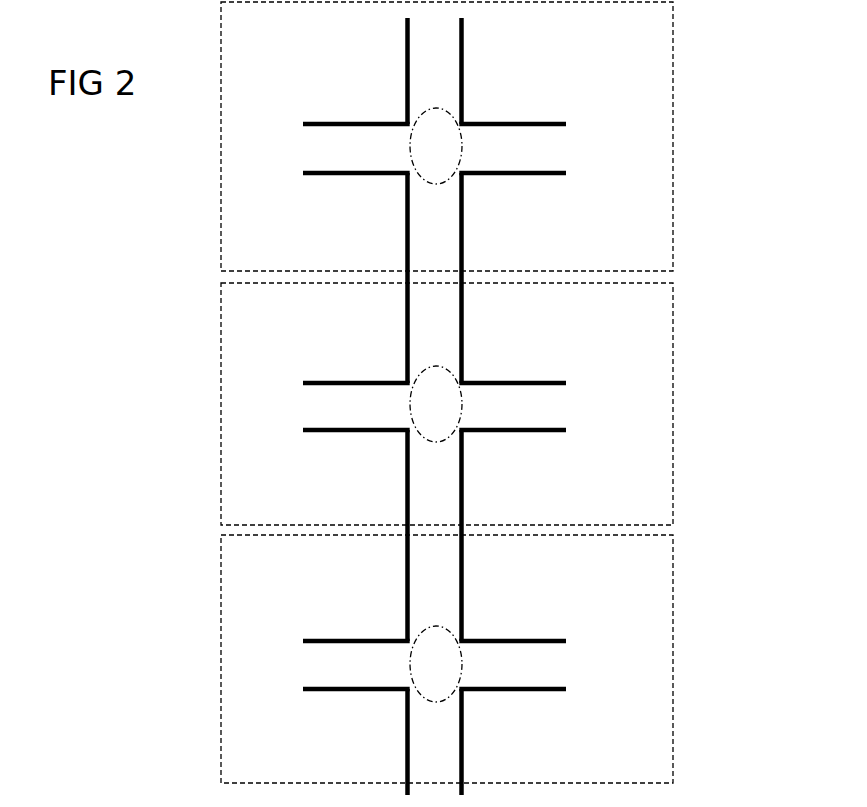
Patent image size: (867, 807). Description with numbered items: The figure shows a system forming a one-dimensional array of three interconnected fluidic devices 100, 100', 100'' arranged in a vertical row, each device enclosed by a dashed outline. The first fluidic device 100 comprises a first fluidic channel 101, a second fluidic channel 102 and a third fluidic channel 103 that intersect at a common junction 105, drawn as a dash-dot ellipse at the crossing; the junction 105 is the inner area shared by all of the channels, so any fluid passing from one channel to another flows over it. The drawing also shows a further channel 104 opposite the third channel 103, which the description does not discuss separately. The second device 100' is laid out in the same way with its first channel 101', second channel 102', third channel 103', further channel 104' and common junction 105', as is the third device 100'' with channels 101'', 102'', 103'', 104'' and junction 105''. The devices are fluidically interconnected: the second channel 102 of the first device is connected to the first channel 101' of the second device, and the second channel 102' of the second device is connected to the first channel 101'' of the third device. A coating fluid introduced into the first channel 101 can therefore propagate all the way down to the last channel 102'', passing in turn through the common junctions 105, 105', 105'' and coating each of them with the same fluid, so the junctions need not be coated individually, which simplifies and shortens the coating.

The fluidic device 100 is at (493, 136).
The first fluidic channel 101 is at (482, 71).
The second fluidic channel 102 is at (483, 225).
The third fluidic channel 103 is at (356, 114).
The third inlet channel 104 is at (548, 126).
The common junction 105 is at (480, 160).
The fluidic device 100' is at (496, 404).
The first fluidic channel 101' is at (485, 330).
The second fluidic channel 102' is at (486, 480).
The second inlet channel (second unit) 103' is at (356, 371).
The third inlet channel (second unit) 104' is at (551, 383).
The common junction 105' is at (484, 418).
The fluidic device 100'' is at (498, 659).
The first fluidic channel 101'' is at (487, 585).
The second fluidic channel 102'' is at (488, 742).
The second inlet channel (third unit) 103'' is at (356, 630).
The third inlet channel (third unit) 104'' is at (553, 641).
The common junction 105'' is at (486, 678).